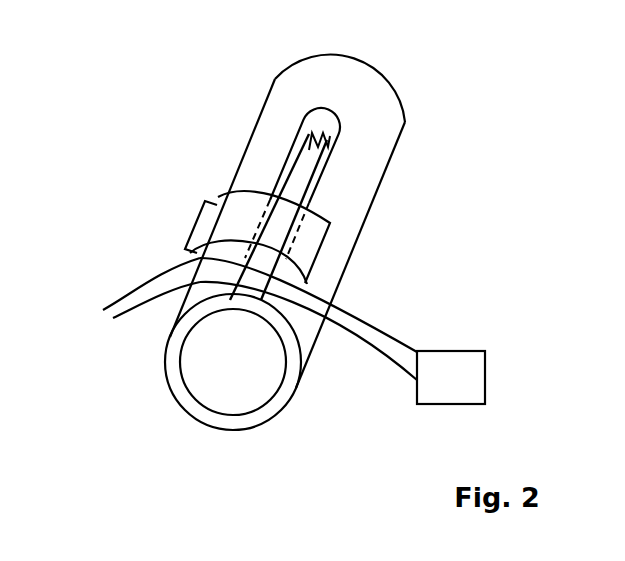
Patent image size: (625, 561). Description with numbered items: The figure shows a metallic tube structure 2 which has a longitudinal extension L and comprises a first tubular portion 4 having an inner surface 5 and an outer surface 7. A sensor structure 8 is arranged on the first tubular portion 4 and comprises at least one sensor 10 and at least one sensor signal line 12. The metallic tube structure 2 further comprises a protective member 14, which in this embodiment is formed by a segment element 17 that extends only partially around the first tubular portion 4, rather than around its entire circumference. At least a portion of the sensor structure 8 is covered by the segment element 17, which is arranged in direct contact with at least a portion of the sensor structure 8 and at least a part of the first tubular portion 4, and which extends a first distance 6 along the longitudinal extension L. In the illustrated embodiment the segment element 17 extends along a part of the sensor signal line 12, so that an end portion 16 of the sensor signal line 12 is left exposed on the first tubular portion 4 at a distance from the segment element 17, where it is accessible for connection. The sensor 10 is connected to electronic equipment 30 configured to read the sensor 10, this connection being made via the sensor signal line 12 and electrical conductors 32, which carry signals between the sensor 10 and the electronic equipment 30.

The metallic tube structure 2 is at (440, 62).
The first tubular portion 4 is at (258, 413).
The inner surface 5 is at (201, 380).
The first distance 6 is at (197, 223).
The outer surface 7 is at (299, 334).
The sensor structure 8 is at (352, 140).
The sensor 10 is at (326, 140).
The sensor signal line 12 is at (297, 163).
The protective member 14 is at (242, 213).
The end portion 16 is at (140, 297).
The segment element 17 is at (312, 238).
The electronic equipment 30 is at (465, 390).
The electrical conductors 32 is at (390, 352).
The longitudinal extension L is at (183, 80).